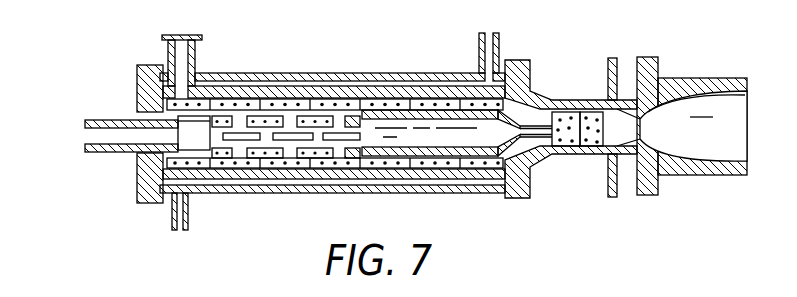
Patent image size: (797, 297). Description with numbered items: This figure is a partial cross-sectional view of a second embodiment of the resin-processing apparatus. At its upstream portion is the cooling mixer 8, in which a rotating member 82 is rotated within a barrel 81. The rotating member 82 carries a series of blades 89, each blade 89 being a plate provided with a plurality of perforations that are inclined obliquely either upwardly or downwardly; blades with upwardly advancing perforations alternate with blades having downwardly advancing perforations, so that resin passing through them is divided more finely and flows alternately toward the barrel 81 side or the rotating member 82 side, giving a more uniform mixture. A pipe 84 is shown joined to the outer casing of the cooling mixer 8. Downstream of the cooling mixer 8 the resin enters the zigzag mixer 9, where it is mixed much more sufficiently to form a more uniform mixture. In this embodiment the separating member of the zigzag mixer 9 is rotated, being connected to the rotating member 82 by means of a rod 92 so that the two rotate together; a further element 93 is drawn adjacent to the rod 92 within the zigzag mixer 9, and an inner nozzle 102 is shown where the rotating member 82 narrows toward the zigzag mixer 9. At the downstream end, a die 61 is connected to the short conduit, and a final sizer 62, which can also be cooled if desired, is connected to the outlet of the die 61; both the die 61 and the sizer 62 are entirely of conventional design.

The cooling mixer 8 is at (328, 71).
The barrel 81 is at (393, 73).
The inlet pipe 84 is at (183, 58).
The rotating member 82 is at (113, 138).
The blade 89 is at (316, 153).
The zigzag mixer 9 is at (568, 98).
The rod 92 is at (557, 134).
The second perforated element 93 is at (601, 128).
The inner nozzle 102 is at (532, 141).
The die 61 is at (630, 102).
The final sizer 62 is at (700, 78).